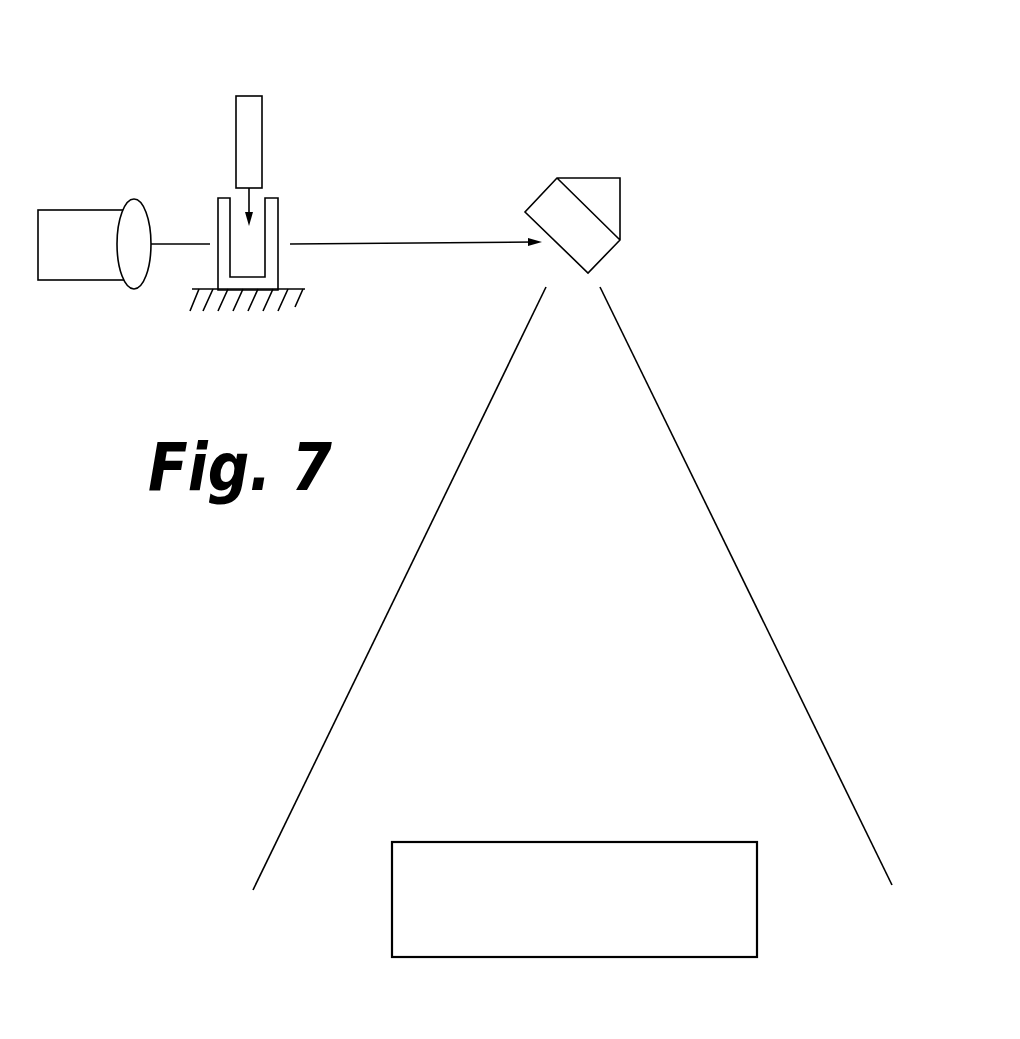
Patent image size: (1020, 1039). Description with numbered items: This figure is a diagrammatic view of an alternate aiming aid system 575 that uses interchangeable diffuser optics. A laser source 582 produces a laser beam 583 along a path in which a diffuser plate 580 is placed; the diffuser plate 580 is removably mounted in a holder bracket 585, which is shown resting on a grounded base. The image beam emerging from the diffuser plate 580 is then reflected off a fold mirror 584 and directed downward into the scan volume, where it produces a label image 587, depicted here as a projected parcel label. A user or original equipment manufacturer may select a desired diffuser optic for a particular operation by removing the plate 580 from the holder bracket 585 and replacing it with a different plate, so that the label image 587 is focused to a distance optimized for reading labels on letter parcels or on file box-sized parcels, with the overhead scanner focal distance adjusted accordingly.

The aiming aid system 575 is at (468, 82).
The diffuser plate 580 is at (250, 129).
The laser source 582 is at (80, 232).
The laser beam 583 is at (177, 243).
The fold mirror 584 is at (588, 243).
The holder bracket 585 is at (272, 220).
The label image 587 is at (543, 848).